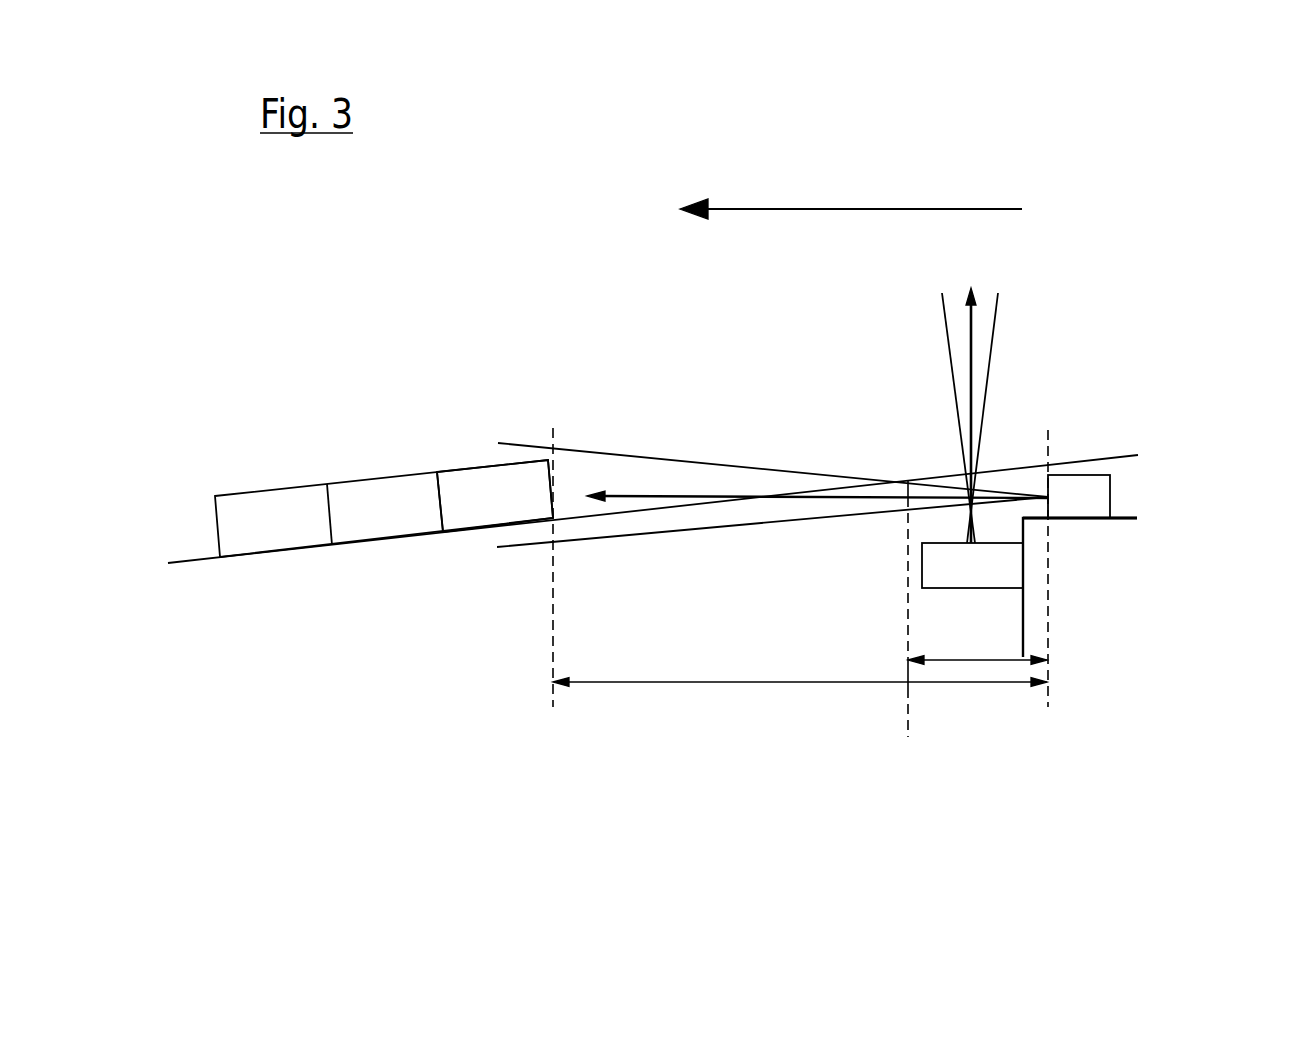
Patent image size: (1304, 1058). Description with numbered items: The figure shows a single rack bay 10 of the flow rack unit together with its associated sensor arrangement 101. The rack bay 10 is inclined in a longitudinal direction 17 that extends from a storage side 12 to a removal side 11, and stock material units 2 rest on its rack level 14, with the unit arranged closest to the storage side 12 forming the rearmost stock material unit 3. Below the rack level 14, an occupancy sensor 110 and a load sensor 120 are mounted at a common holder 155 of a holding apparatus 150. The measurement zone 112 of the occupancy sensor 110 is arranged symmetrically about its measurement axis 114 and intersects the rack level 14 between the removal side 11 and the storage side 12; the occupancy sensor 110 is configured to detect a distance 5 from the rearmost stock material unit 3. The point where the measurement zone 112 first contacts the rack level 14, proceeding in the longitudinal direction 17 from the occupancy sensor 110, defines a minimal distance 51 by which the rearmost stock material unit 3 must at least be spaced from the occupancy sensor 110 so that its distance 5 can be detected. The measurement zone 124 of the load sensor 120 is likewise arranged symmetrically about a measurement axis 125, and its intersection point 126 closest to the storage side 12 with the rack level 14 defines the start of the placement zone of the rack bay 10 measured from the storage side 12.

The stock material unit 2 is at (283, 485).
The rearmost stock material unit 3 is at (458, 465).
The distance 5 is at (815, 683).
The rack bay 10 is at (1180, 398).
The removal side 11 is at (374, 444).
The storage side 12 is at (1092, 405).
The rack level 14 is at (205, 561).
The longitudinal direction 17 is at (847, 208).
The minimal distance 51 is at (980, 662).
The sensor arrangement 101 is at (1104, 596).
The occupancy sensor 110 is at (1110, 497).
The measurement zone 112 is at (692, 460).
The measurement axis 114 is at (718, 497).
The load sensor 120 is at (972, 565).
The measurement zone 124 is at (945, 333).
The measurement axis 125 is at (977, 330).
The intersection point 126 is at (980, 472).
The holding apparatus 150 is at (1118, 522).
The holder 155 is at (1208, 573).